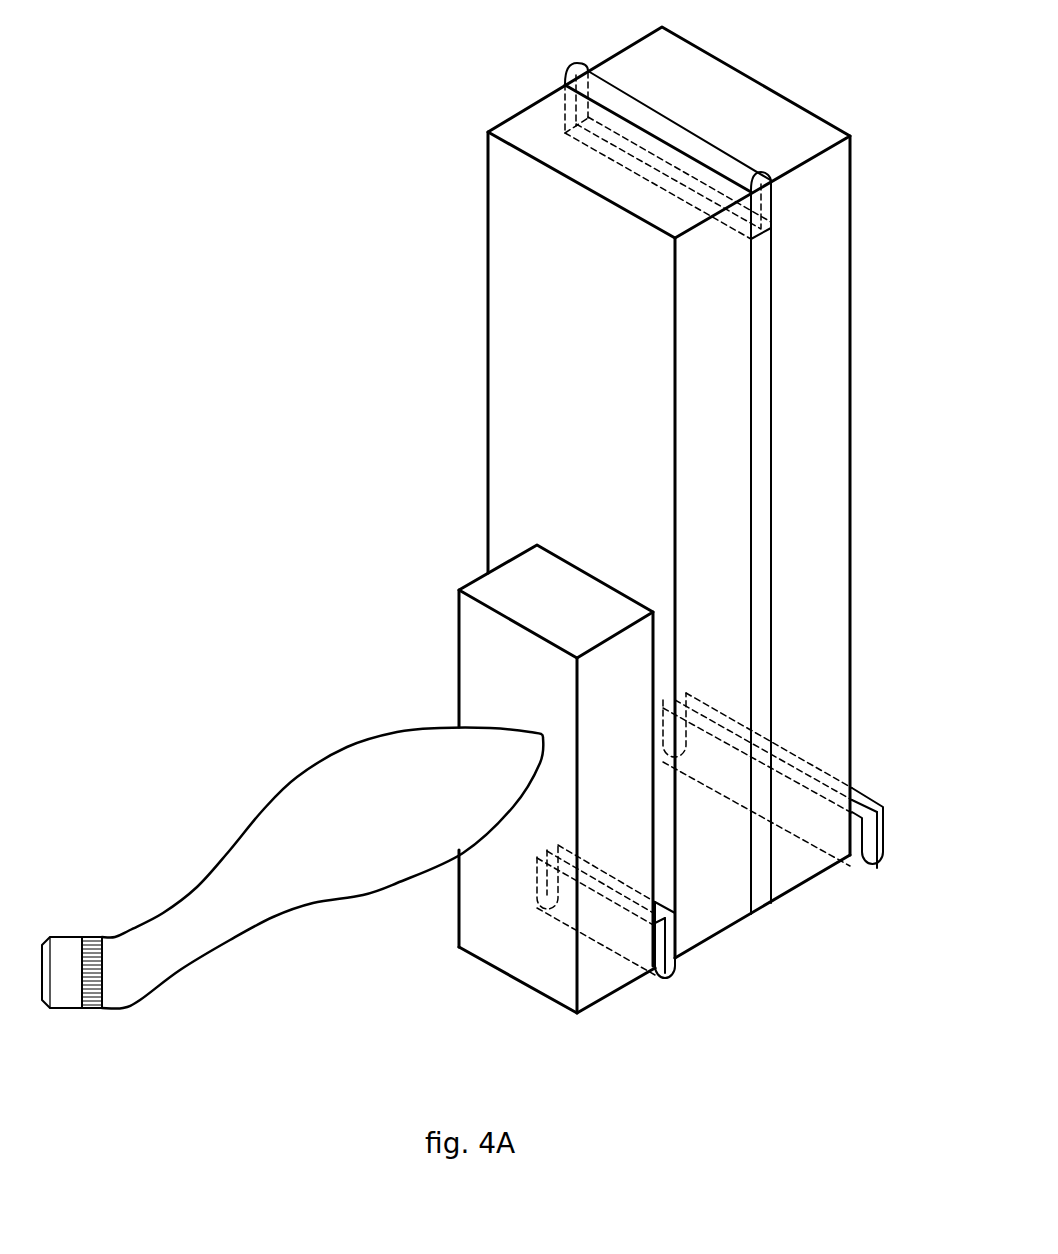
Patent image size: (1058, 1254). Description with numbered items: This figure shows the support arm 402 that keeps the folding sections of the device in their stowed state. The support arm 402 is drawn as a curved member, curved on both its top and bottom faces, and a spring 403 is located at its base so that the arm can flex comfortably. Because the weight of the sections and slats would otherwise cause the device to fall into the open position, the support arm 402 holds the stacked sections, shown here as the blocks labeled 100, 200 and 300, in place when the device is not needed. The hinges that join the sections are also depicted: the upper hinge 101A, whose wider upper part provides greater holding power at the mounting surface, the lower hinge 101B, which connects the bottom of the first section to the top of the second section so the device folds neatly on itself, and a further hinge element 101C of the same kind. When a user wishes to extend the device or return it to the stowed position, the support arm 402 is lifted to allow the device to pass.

The first housing 100 is at (807, 383).
The second housing 200 is at (595, 504).
The third housing 300 is at (512, 647).
The upper hinge 101A is at (867, 853).
The lower hinge 101B is at (563, 79).
The fastening strap 101C is at (671, 967).
The support arm 402 is at (345, 805).
The spring 403 is at (90, 998).